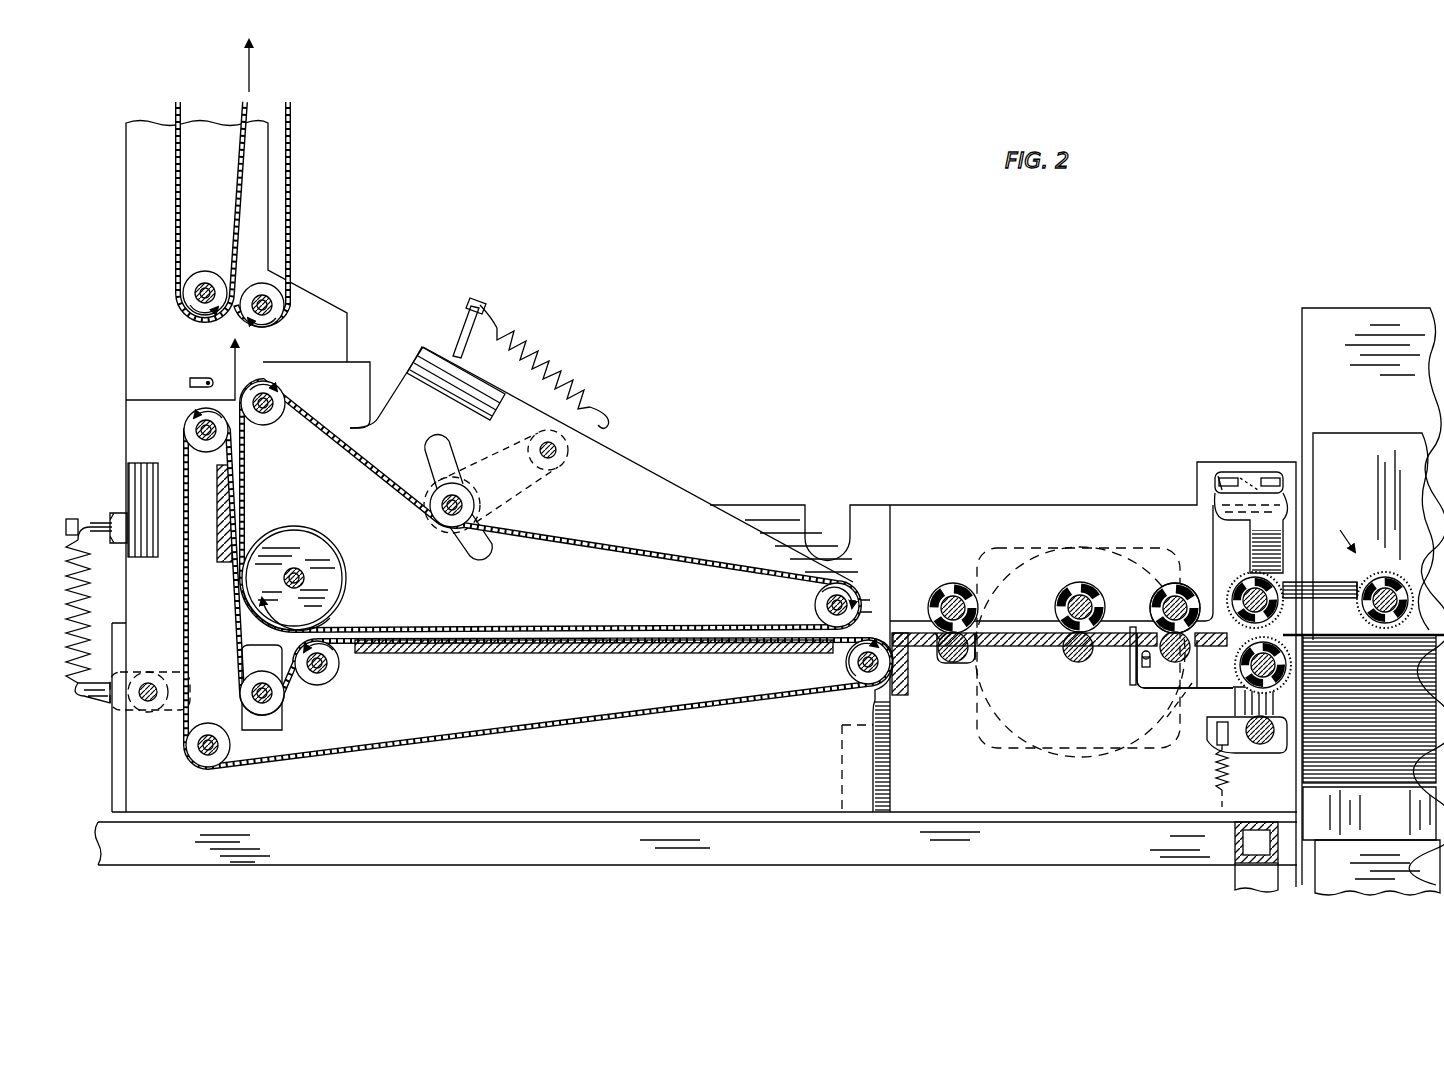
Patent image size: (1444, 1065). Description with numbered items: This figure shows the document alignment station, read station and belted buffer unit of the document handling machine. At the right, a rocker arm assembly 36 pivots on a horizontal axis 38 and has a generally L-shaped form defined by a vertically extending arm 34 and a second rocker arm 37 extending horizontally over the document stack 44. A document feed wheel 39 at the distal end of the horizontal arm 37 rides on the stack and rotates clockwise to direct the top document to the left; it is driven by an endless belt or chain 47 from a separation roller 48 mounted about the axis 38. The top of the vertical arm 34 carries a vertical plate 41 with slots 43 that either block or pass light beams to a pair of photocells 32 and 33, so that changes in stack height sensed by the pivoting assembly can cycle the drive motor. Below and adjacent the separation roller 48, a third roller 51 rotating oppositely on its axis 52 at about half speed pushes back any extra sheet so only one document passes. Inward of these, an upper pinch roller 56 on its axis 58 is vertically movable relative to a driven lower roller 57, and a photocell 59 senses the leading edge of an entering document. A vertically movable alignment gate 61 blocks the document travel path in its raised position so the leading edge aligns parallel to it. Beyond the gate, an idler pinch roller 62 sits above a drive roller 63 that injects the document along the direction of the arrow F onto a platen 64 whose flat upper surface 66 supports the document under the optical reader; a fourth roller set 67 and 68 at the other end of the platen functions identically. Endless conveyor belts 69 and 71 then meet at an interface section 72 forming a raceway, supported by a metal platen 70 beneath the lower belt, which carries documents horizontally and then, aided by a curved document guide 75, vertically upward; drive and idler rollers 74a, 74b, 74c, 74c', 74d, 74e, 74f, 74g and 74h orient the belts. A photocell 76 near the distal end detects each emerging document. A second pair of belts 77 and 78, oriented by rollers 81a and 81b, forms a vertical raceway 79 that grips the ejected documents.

The photocell 32 is at (1265, 474).
The photocell 33 is at (1224, 474).
The vertically extending arm 34 is at (1262, 527).
The rocker arm assembly 36 is at (1296, 560).
The second rocker arm 37 is at (1357, 568).
The horizontal axis 38 is at (1234, 664).
The document feed wheel 39 is at (1390, 580).
The vertical plate 41 is at (1234, 474).
The slots 43 is at (1230, 481).
The stack of documents 44 is at (1368, 775).
The endless belt or chain 47 is at (1326, 582).
The separation roller 48 is at (1248, 582).
The third roller 51 is at (1170, 692).
The axis 52 is at (1240, 692).
The pinch roller 56 is at (1165, 590).
The lower roller 57 is at (1137, 682).
The axis 58 is at (1187, 588).
The photocell 59 is at (1163, 640).
The alignment gate 61 is at (1129, 660).
The idler pinch roller 62 is at (1072, 592).
The drive roller 63 is at (1064, 652).
The platen 64 is at (978, 652).
The flat upper surface 66 is at (1003, 631).
The read roller 67 is at (949, 586).
The read roller 68 is at (945, 662).
The endless conveyor belt 69 is at (700, 568).
The metal platen 70 is at (518, 655).
The endless conveyor belt 71 is at (784, 704).
The interface section 72 is at (512, 626).
The drive or idler roller 74a is at (828, 605).
The drive or idler roller 74b is at (858, 662).
The drive or idler roller 74c is at (235, 745).
The tension roller 74c' is at (499, 505).
The drive or idler roller 74d is at (285, 700).
The drive or idler roller 74e is at (341, 663).
The drive or idler roller 74f is at (347, 579).
The drive or idler roller 74g is at (281, 421).
The drive or idler roller 74h is at (184, 438).
The curved document guide 75 is at (239, 619).
The photocell 76 is at (192, 381).
The conveyor belt 77 is at (270, 190).
The conveyor belt 78 is at (176, 198).
The vertical raceway 79 is at (248, 104).
The drive or idler roller 81a is at (272, 300).
The drive or idler roller 81b is at (182, 312).
The arrow F is at (935, 632).